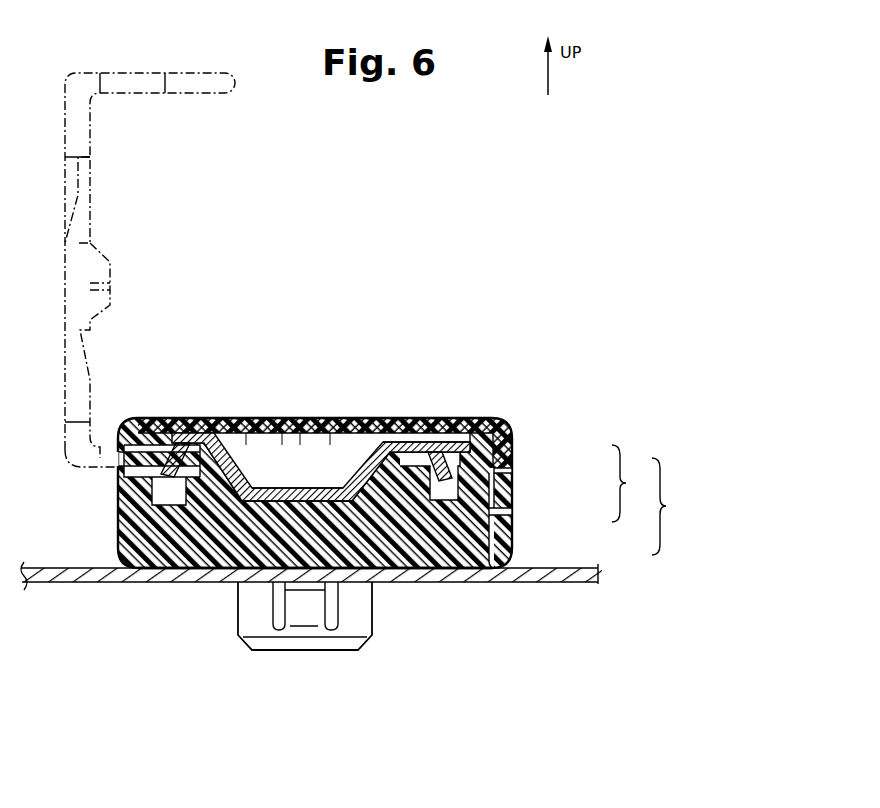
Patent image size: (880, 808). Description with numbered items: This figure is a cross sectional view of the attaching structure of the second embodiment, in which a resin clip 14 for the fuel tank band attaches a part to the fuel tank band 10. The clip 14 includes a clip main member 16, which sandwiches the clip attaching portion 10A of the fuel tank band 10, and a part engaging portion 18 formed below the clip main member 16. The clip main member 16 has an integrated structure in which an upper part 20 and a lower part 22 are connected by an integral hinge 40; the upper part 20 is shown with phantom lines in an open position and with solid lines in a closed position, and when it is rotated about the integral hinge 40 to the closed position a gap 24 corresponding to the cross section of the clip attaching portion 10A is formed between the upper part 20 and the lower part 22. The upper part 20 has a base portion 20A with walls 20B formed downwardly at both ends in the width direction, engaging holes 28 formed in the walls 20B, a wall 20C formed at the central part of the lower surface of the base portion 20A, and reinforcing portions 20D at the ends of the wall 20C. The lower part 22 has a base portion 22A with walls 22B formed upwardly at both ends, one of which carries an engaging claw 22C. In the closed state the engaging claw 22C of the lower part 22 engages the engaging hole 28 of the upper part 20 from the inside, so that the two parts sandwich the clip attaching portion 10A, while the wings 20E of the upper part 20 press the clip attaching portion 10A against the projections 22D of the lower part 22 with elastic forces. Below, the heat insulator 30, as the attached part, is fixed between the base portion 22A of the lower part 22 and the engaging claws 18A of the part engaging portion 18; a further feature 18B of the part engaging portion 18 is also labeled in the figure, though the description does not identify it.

The fuel tank band 10 is at (249, 430).
The clip attaching portion 10A is at (330, 437).
The clip for the fuel tank band 14 is at (672, 506).
The clip main member 16 is at (632, 483).
The part engaging portion 18 is at (449, 605).
The engaging claws 18A is at (304, 638).
The clip slot 18B is at (372, 580).
The upper part 20 is at (328, 294).
The base portion 20A is at (346, 418).
The walls 20B is at (510, 438).
The wall 20C is at (330, 468).
The reinforcing portions 20D is at (306, 433).
The wings 20E is at (183, 433).
The lower part 22 is at (515, 567).
The base portion 22A is at (188, 570).
The walls 22B is at (505, 524).
The engaging claw 22C is at (500, 482).
The projections 22D is at (150, 418).
The gap 24 is at (282, 433).
The engaging holes 28 is at (510, 472).
The heat insulator 30 is at (70, 582).
The integral hinge 40 is at (122, 470).